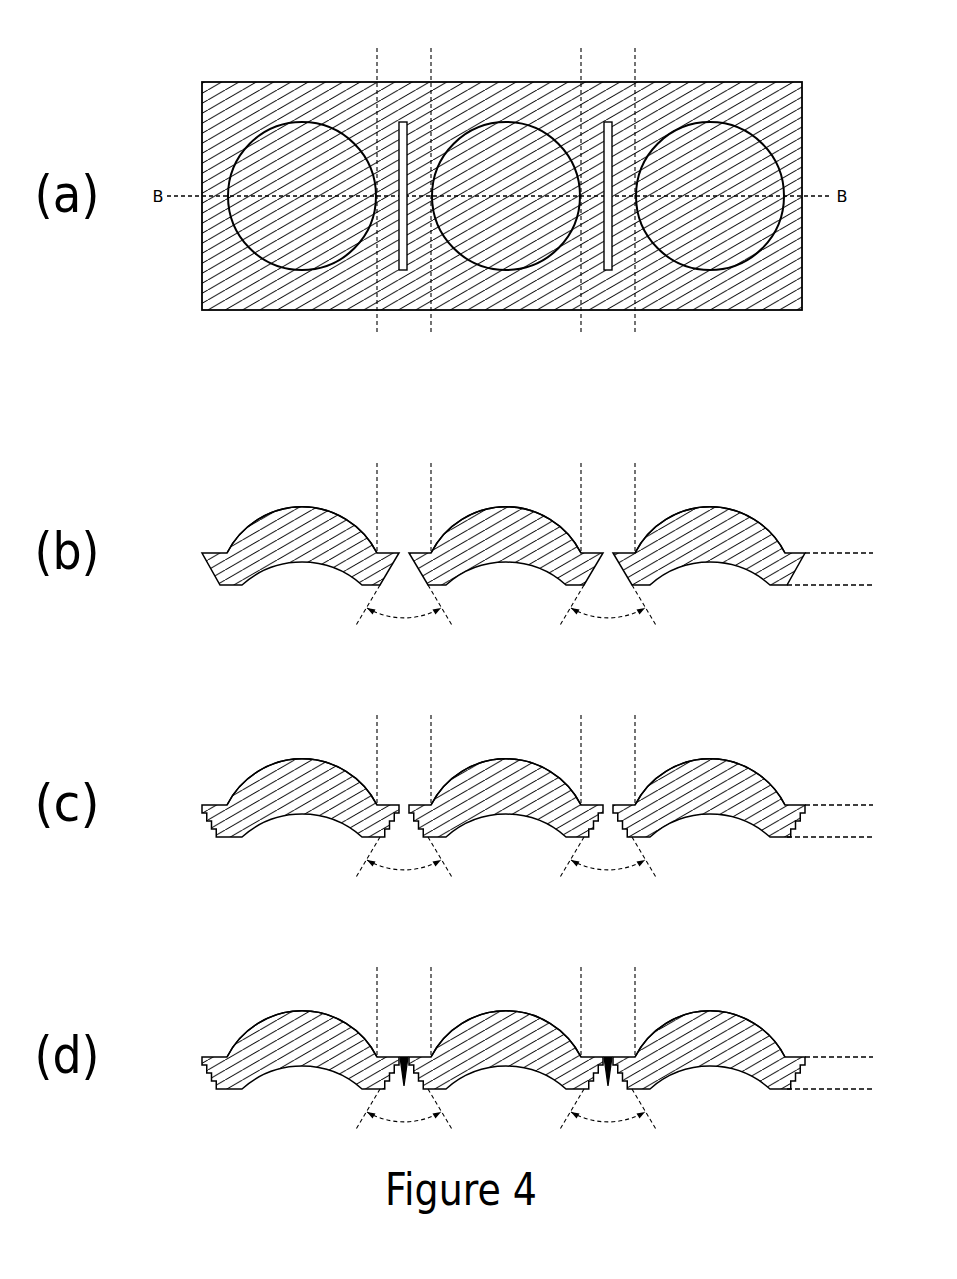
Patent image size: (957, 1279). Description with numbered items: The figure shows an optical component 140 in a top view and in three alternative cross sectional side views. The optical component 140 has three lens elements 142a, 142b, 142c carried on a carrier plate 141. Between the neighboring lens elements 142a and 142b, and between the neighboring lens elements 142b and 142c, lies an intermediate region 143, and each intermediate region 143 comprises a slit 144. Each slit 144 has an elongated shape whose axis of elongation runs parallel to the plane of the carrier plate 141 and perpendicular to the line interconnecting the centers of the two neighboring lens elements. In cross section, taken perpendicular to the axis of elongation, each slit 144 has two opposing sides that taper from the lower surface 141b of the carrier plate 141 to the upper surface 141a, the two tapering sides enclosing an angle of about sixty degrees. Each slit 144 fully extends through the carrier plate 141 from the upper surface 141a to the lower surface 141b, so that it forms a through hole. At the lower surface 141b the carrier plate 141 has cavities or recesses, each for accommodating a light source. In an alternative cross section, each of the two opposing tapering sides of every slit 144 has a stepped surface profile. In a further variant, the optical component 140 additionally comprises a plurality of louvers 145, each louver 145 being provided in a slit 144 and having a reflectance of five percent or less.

The optical component 140 is at (797, 49).
The carrier plate 141 is at (205, 550).
The upper surface of the carrier plate 141a is at (860, 550).
The lower surface of the carrier plate 141b is at (863, 590).
The lens element 142a is at (285, 1007).
The lens element 142b is at (489, 1007).
The lens element 142c is at (693, 1007).
The intermediate region 143 is at (664, 55).
The slit 144 is at (403, 271).
The louver 145 is at (399, 1052).